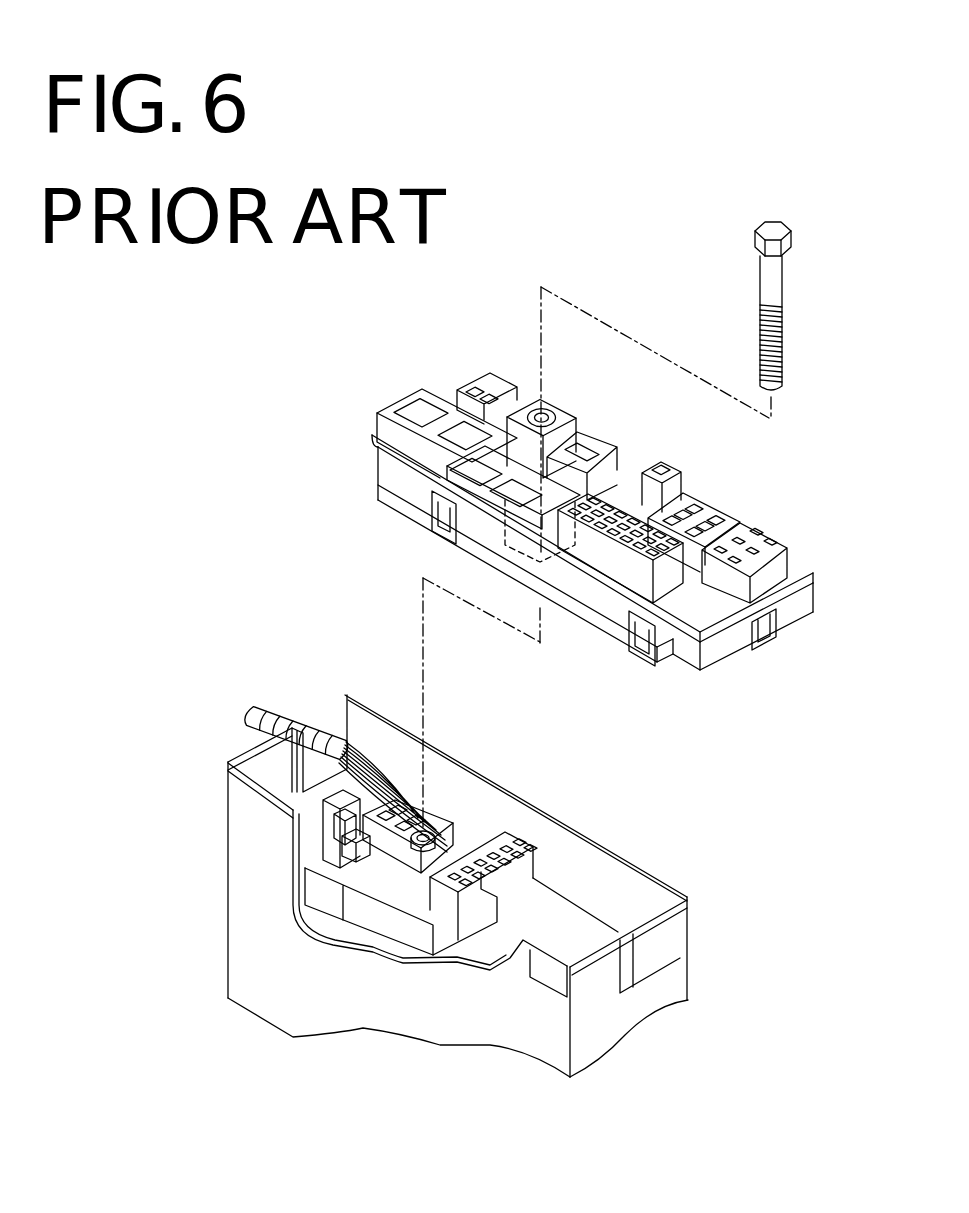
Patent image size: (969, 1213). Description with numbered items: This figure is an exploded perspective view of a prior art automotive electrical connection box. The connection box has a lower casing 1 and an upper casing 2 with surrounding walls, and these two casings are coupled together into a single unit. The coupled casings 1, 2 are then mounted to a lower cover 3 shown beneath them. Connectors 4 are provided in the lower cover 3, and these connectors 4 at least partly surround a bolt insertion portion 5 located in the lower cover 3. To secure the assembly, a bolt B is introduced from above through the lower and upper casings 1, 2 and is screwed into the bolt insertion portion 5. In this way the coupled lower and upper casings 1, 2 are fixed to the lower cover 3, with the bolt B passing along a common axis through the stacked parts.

The lower casing 1 is at (733, 653).
The upper casing 2 is at (817, 593).
The lower cover 3 is at (470, 1033).
The connectors 4 is at (387, 905).
The bolt insertion portion 5 is at (437, 813).
The bolt B is at (777, 281).